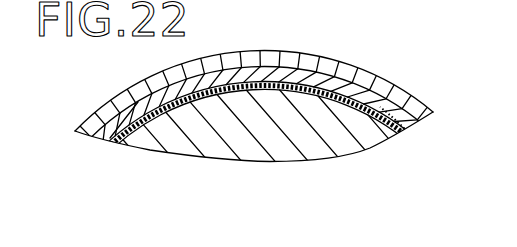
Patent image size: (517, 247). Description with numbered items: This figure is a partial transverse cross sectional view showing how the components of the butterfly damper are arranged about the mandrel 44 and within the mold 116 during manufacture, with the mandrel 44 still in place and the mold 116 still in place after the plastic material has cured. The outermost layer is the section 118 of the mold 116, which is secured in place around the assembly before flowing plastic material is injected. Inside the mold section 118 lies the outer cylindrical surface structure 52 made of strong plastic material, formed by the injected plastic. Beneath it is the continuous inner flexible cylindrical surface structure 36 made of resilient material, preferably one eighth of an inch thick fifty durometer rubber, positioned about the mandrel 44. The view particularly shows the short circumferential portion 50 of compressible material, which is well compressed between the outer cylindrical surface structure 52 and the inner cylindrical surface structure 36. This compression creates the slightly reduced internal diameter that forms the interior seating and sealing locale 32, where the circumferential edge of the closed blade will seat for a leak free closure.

The interior seating and sealing locale 32 is at (421, 92).
The inner flexible cylindrical surface structure 36 is at (399, 137).
The mandrel 44 is at (249, 162).
The short circumferential portion of compressible material 50 is at (410, 133).
The outer cylindrical surface structure 52 is at (375, 83).
The mold 116 is at (308, 50).
The section of the mold 118 is at (234, 52).